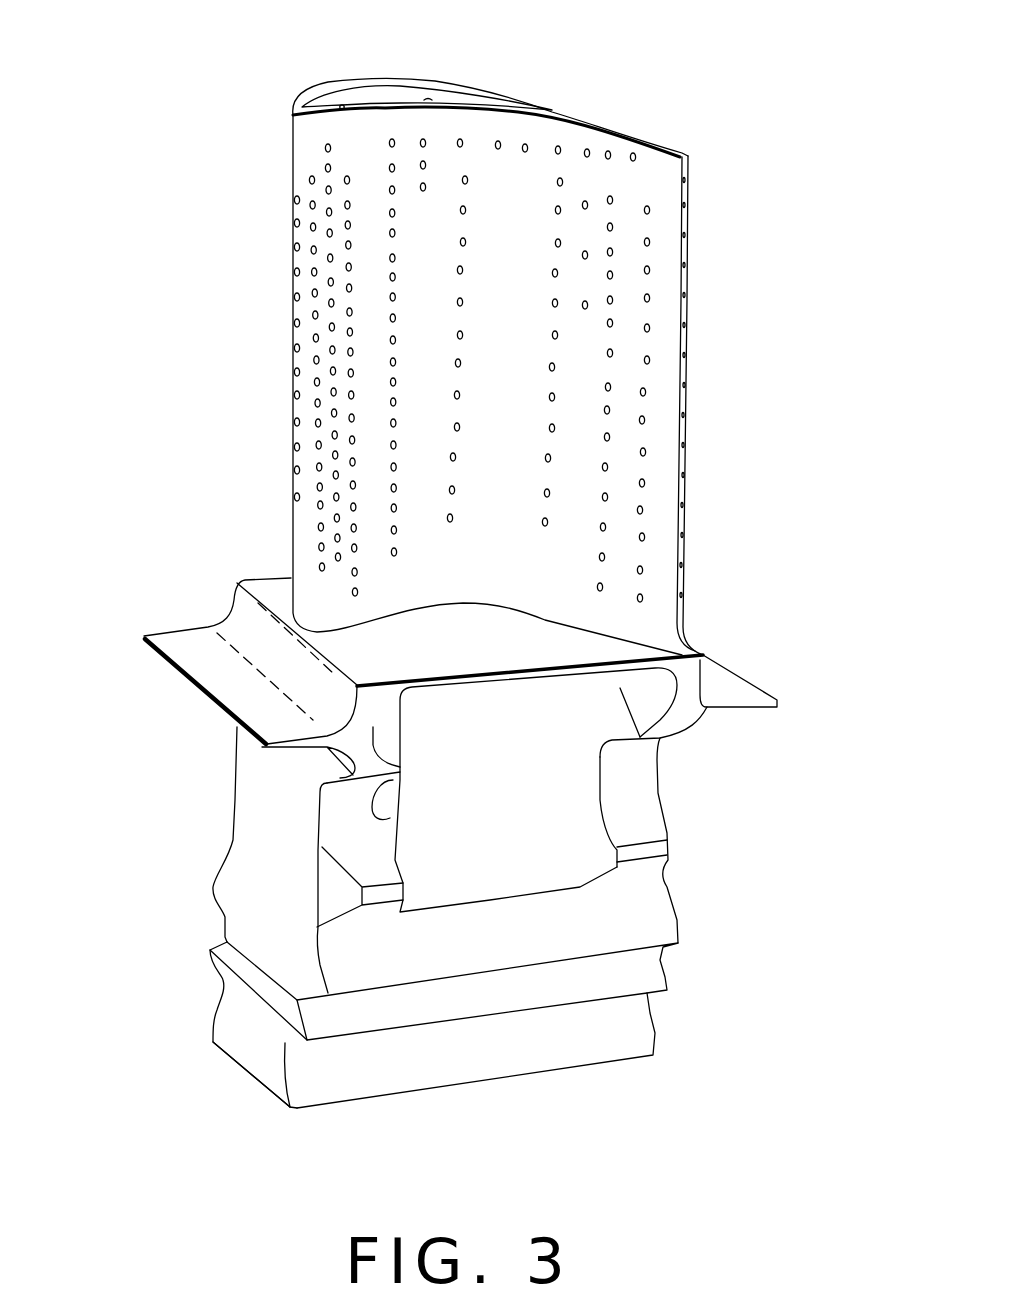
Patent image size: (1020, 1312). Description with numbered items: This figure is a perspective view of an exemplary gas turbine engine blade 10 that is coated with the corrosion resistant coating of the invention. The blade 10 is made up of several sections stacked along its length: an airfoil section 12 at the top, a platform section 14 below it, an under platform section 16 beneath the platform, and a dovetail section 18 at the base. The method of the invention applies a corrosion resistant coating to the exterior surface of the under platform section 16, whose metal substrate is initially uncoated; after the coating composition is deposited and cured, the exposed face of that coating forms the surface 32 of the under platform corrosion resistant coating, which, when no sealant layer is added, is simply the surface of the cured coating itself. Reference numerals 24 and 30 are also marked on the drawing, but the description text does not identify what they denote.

The gas turbine engine blade 10 is at (232, 76).
The airfoil section 12 is at (387, 382).
The platform section 14 is at (525, 656).
The under platform section 16 is at (520, 740).
The dovetail section 18 is at (600, 1046).
The cooling air inlet 24 is at (240, 1073).
The cooling holes 30 is at (343, 104).
The surface of under platform corrosion resistant coating 32 is at (485, 688).